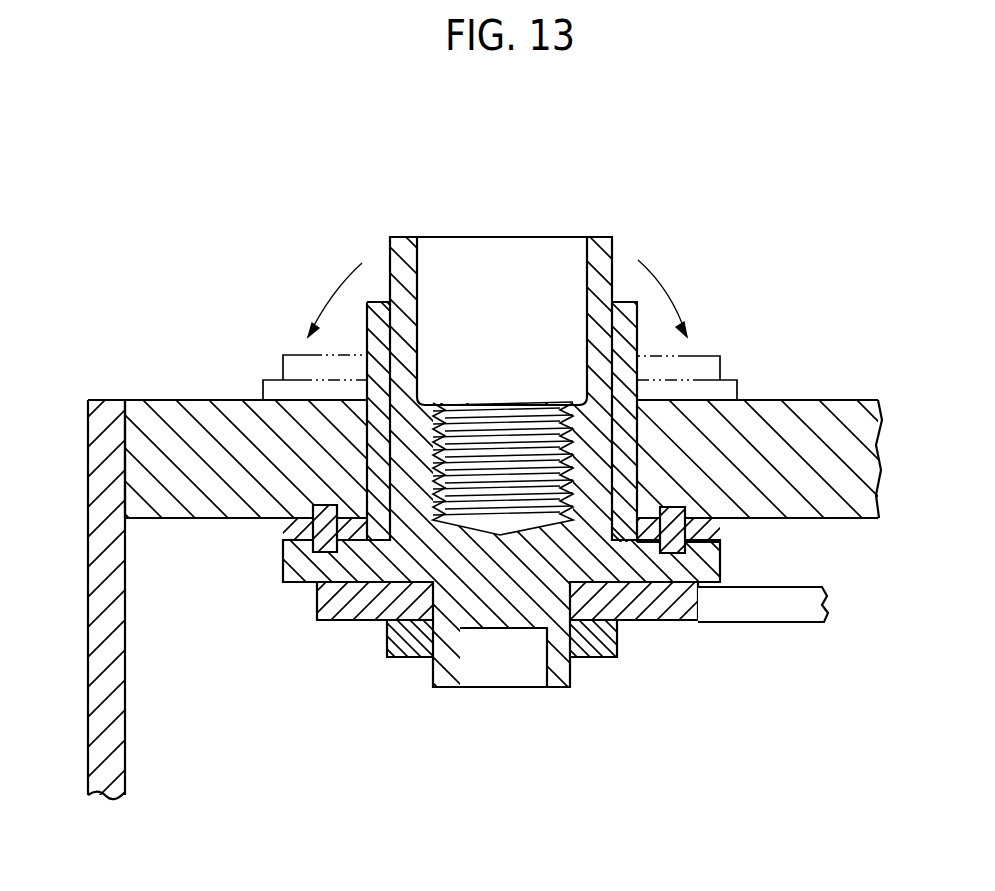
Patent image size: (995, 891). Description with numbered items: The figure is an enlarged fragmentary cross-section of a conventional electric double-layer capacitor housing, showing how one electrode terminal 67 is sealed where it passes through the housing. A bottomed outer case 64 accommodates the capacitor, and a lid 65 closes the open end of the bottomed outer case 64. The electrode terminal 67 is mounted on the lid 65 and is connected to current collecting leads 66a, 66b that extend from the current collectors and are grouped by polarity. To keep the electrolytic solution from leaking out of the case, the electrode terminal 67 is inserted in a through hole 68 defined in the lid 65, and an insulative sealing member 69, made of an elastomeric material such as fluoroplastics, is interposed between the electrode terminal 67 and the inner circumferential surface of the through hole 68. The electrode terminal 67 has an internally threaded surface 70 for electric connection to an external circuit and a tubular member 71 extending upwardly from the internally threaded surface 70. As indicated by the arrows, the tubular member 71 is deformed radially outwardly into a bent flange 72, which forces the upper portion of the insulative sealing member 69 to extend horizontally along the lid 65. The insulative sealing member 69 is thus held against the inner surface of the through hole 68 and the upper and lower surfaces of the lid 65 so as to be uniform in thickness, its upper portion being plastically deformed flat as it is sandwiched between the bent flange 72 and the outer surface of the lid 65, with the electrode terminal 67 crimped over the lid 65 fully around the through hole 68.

The bottomed outer case 64 is at (88, 630).
The lid 65 is at (802, 398).
The current collecting lead 66a is at (577, 659).
The current collecting lead 66b is at (743, 603).
The electrode terminal 67 is at (497, 403).
The through hole 68 is at (637, 448).
The insulative sealing member 69 is at (367, 340).
The internally threaded surface 70 is at (493, 443).
The tubular member 71 is at (402, 237).
The bent flange 72 is at (283, 355).